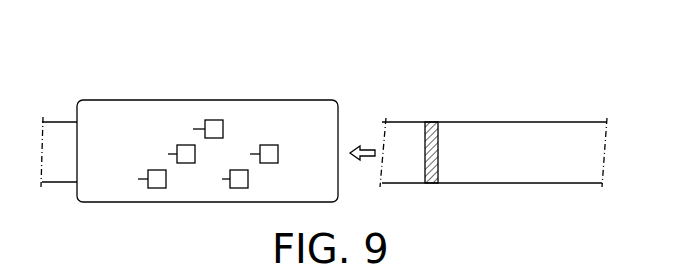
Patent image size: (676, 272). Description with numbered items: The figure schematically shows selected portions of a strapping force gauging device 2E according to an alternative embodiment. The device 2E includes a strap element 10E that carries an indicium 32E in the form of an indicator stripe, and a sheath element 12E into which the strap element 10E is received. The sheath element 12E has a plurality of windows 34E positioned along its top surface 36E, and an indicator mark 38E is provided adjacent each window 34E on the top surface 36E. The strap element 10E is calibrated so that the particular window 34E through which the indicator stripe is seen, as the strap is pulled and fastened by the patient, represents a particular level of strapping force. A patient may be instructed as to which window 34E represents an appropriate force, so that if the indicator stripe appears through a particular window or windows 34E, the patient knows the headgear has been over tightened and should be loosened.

The strapping force gauging device 2E is at (214, 143).
The strap element 10E is at (493, 126).
The sheath element 12E is at (115, 118).
The indicium 32E is at (433, 118).
The windows 34E is at (212, 119).
The top surface 36E is at (305, 113).
The indicator mark 38E is at (189, 116).